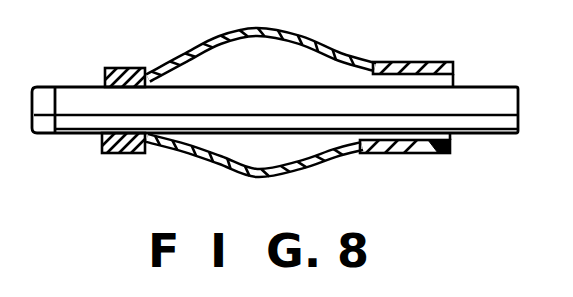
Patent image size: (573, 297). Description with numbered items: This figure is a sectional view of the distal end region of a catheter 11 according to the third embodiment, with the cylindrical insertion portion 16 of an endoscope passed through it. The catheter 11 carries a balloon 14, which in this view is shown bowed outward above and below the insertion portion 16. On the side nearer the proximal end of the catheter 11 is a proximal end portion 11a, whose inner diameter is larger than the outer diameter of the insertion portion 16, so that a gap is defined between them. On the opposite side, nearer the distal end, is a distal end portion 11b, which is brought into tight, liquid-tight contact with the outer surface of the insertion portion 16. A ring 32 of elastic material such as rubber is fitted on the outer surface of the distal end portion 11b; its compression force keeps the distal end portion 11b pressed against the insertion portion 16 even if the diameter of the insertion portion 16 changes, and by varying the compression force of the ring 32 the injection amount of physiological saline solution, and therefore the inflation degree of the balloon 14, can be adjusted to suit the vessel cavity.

The balloon 14 is at (333, 47).
The insertion portion 16 is at (418, 98).
The ring 32 is at (110, 68).
The proximal end portion 11a is at (444, 62).
The distal end portion 11b is at (101, 141).
The catheter 11 is at (441, 153).